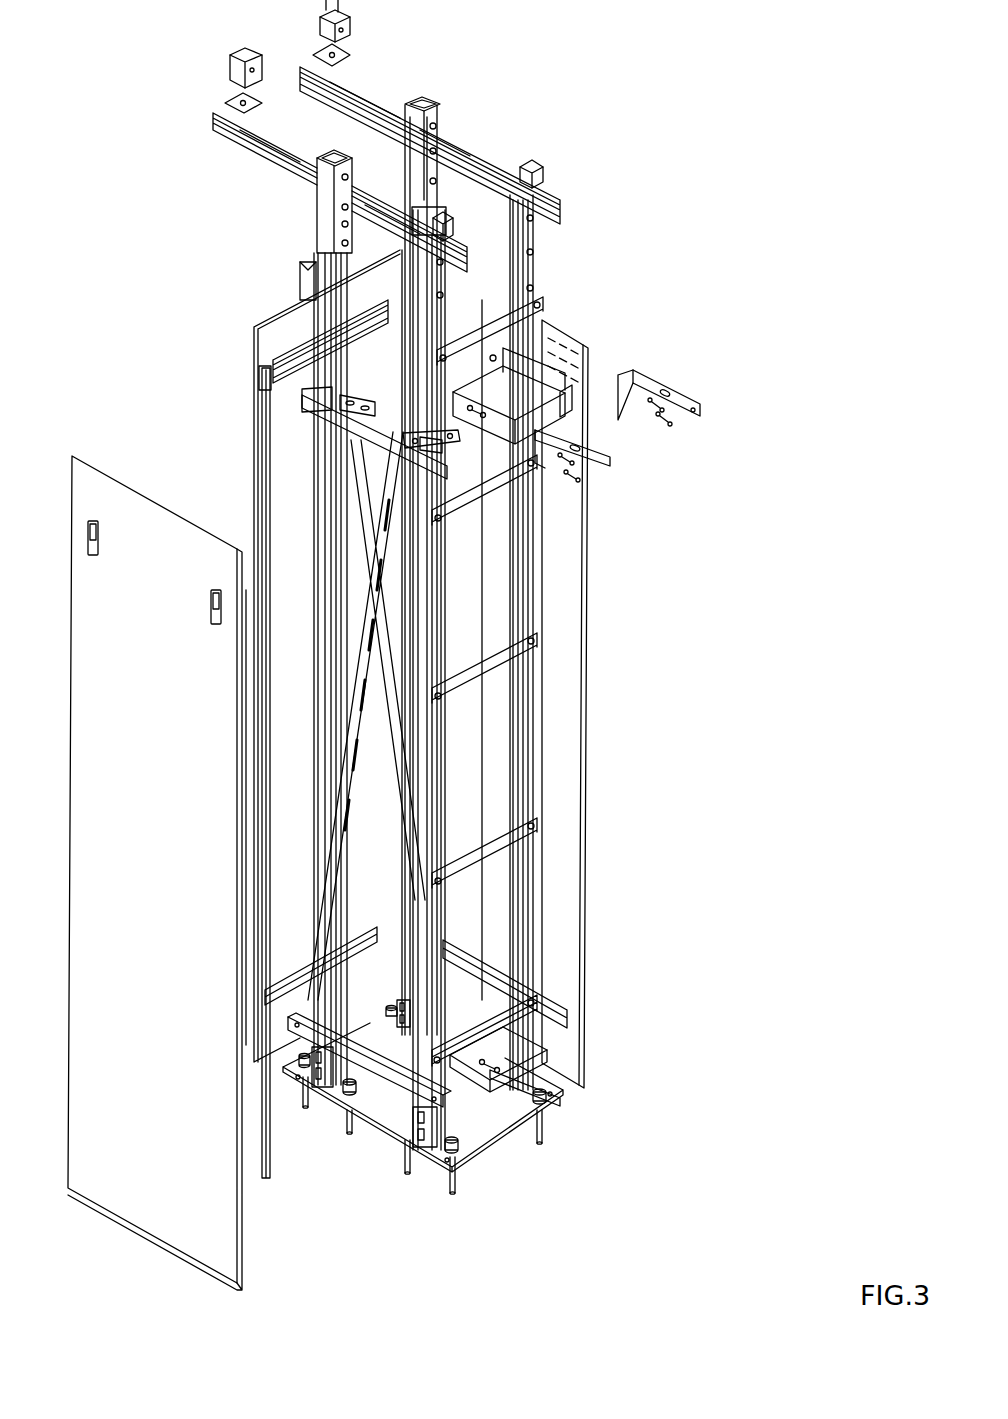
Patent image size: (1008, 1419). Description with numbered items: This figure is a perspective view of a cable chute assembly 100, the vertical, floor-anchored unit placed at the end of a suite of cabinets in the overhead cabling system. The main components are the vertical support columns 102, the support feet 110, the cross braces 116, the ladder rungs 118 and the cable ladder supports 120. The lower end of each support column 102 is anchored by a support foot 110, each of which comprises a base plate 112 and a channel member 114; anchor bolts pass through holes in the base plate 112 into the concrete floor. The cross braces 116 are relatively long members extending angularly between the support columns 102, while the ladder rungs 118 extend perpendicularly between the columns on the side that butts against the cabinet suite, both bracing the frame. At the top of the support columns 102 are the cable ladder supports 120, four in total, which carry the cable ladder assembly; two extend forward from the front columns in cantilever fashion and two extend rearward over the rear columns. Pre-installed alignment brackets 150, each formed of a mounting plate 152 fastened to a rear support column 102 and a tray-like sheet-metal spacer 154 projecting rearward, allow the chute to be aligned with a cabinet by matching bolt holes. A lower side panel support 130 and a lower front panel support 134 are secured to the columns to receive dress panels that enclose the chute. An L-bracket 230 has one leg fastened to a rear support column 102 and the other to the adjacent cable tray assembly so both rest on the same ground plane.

The cable chute assembly 100 is at (655, 612).
The vertical support column 102 is at (317, 595).
The support foot 110 is at (433, 1162).
The base plate 112 is at (400, 1130).
The channel member 114 is at (405, 1118).
The cross brace 116 is at (360, 617).
The ladder rung 118 is at (530, 675).
The cable ladder support 120 is at (470, 137).
The lower side panel support 130 is at (390, 1083).
The lower front panel support 134 is at (325, 422).
The alignment bracket 150 is at (577, 363).
The mounting plate 152 is at (540, 313).
The spacer 154 is at (567, 407).
The L-bracket 230 is at (677, 400).